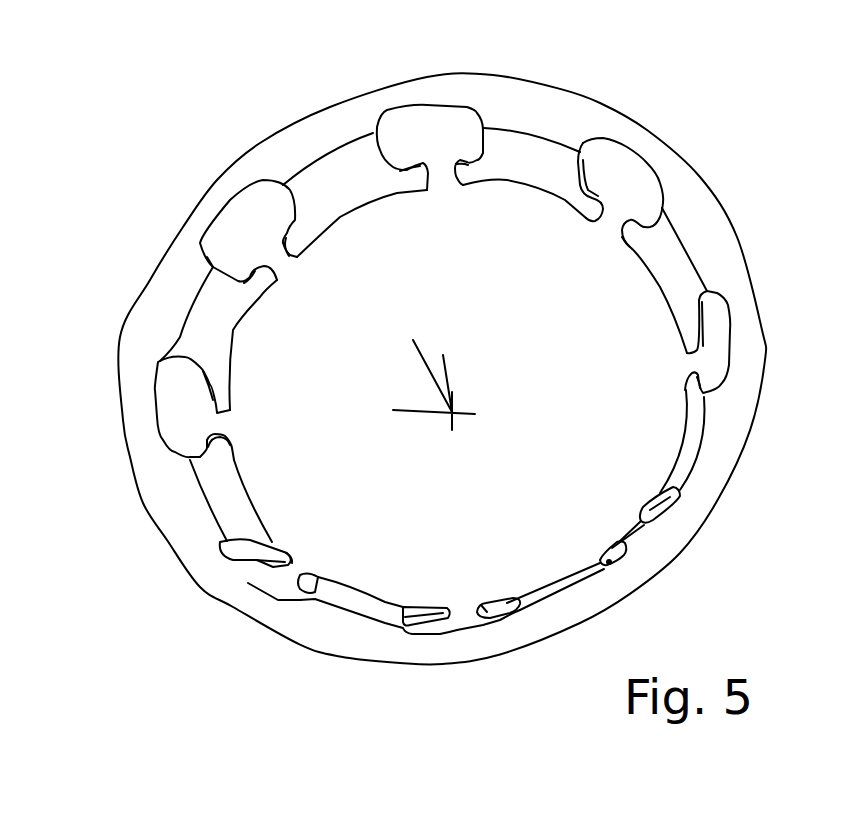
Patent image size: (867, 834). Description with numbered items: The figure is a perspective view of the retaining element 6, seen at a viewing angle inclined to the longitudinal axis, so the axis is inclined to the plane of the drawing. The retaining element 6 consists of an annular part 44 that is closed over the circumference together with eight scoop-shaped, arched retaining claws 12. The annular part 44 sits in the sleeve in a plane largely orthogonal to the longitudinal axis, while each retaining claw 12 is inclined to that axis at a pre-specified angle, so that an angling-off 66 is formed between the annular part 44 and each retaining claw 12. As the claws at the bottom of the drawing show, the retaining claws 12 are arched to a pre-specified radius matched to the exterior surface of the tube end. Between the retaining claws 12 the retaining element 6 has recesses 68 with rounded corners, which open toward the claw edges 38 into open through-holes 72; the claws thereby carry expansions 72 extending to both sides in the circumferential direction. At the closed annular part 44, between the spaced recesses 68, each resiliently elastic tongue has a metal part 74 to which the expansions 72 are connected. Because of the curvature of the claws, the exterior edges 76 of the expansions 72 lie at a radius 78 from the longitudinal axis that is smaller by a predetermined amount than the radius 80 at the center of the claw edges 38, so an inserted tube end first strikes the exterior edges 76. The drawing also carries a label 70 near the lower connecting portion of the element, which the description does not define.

The retaining element 6 is at (258, 134).
The annular part 44 is at (160, 290).
The angling-off 66 is at (185, 483).
The radius 80 is at (351, 204).
The metal part 74 is at (207, 317).
The radius 78 is at (421, 188).
The exterior edges 76 is at (590, 218).
The claw edges 38 is at (663, 280).
The retaining claws 12 is at (190, 367).
The through-holes 72 is at (224, 445).
The recesses 68 is at (248, 563).
The connecting portion 70 is at (293, 573).